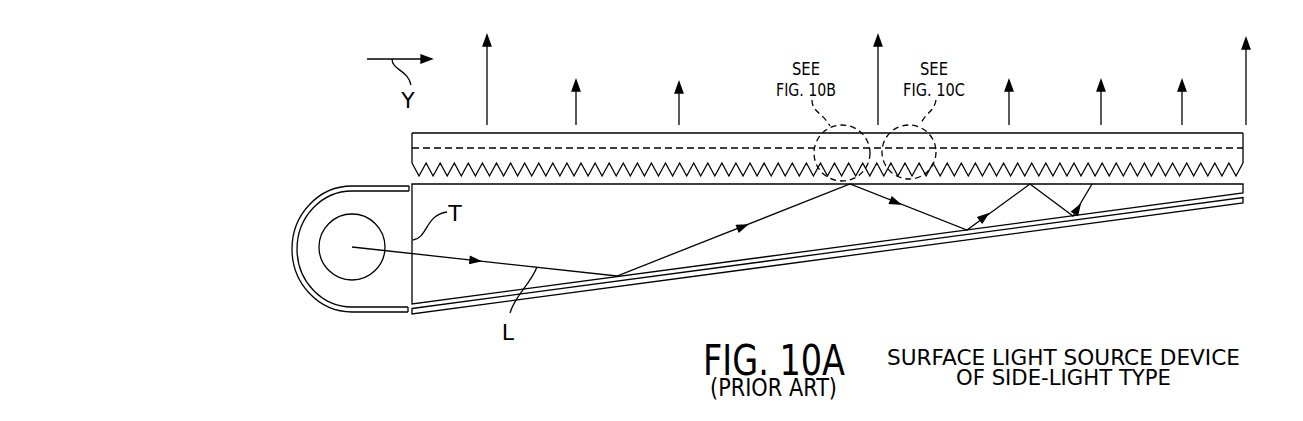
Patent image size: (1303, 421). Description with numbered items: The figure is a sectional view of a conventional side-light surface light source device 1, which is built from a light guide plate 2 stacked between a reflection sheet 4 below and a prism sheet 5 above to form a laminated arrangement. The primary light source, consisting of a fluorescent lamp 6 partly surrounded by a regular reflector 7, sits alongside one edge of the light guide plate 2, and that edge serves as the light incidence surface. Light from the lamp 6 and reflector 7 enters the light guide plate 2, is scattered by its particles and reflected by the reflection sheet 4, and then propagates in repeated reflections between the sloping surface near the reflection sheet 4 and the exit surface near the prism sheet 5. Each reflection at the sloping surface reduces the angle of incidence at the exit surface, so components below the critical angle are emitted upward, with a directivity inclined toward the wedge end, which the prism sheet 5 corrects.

The side-light surface light source device 1 is at (776, 221).
The light guide plate 2 is at (793, 238).
The reflection sheet 4 is at (937, 243).
The prism sheet 5 is at (1243, 138).
The fluorescent lamp 6 is at (355, 273).
The reflector 7 is at (305, 289).